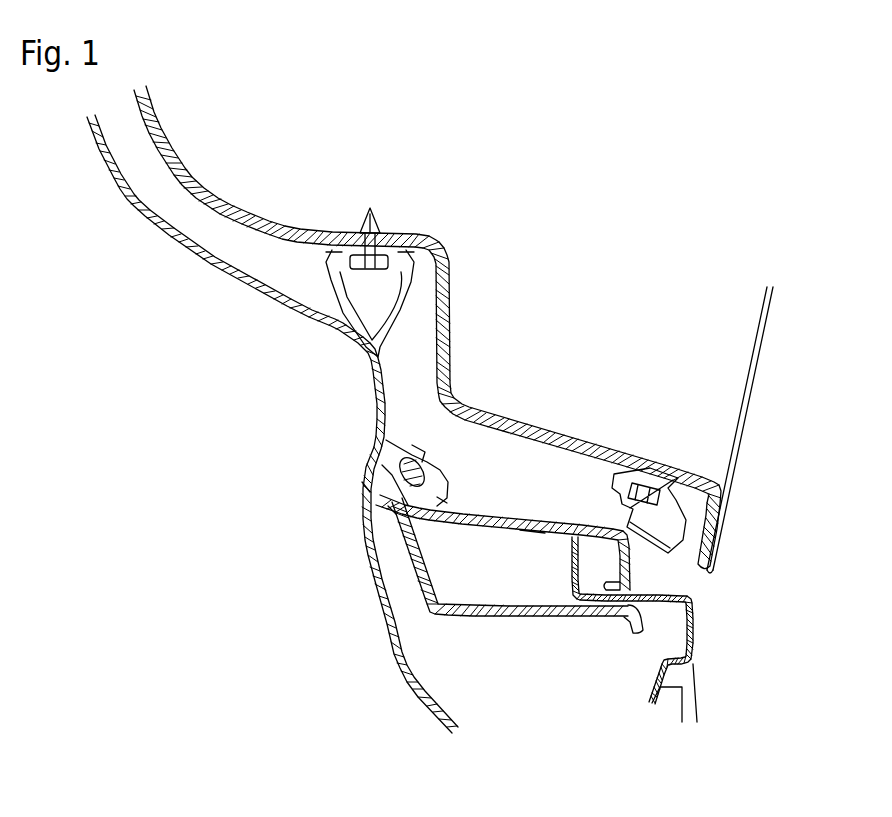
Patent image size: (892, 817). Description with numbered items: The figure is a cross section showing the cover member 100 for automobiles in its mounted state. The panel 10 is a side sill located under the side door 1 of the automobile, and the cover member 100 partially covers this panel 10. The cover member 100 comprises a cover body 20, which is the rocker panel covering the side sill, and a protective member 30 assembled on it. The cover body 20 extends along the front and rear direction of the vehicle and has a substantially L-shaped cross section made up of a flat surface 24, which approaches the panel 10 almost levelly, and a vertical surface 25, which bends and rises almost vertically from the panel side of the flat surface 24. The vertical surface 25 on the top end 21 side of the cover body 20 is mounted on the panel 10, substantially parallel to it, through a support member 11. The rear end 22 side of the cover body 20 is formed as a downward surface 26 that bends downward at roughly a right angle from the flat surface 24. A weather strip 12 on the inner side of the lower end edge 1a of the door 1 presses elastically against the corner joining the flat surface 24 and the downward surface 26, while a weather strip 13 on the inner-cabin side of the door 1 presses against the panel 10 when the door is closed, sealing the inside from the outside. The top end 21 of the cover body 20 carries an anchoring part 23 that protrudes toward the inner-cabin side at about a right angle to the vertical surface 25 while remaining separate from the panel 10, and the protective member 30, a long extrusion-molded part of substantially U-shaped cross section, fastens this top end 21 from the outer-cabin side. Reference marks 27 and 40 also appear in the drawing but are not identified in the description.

The door 1 is at (755, 405).
The lower end edge 1a is at (717, 550).
The panel 10 is at (375, 385).
The support member 11 is at (515, 618).
The weather strip 12 is at (660, 550).
The weather strip 13 is at (318, 297).
The cover body 20 is at (502, 515).
The top end 21 is at (418, 450).
The rear end 22 is at (613, 607).
The anchoring part 23 is at (365, 485).
The flat surface 24 is at (530, 530).
The vertical surface 25 is at (395, 500).
The downward surface 26 is at (658, 548).
The lip 27 is at (440, 500).
The protective member 30 is at (430, 457).
The joint portion 40 is at (380, 455).
The cover member for automobiles 100 is at (443, 437).